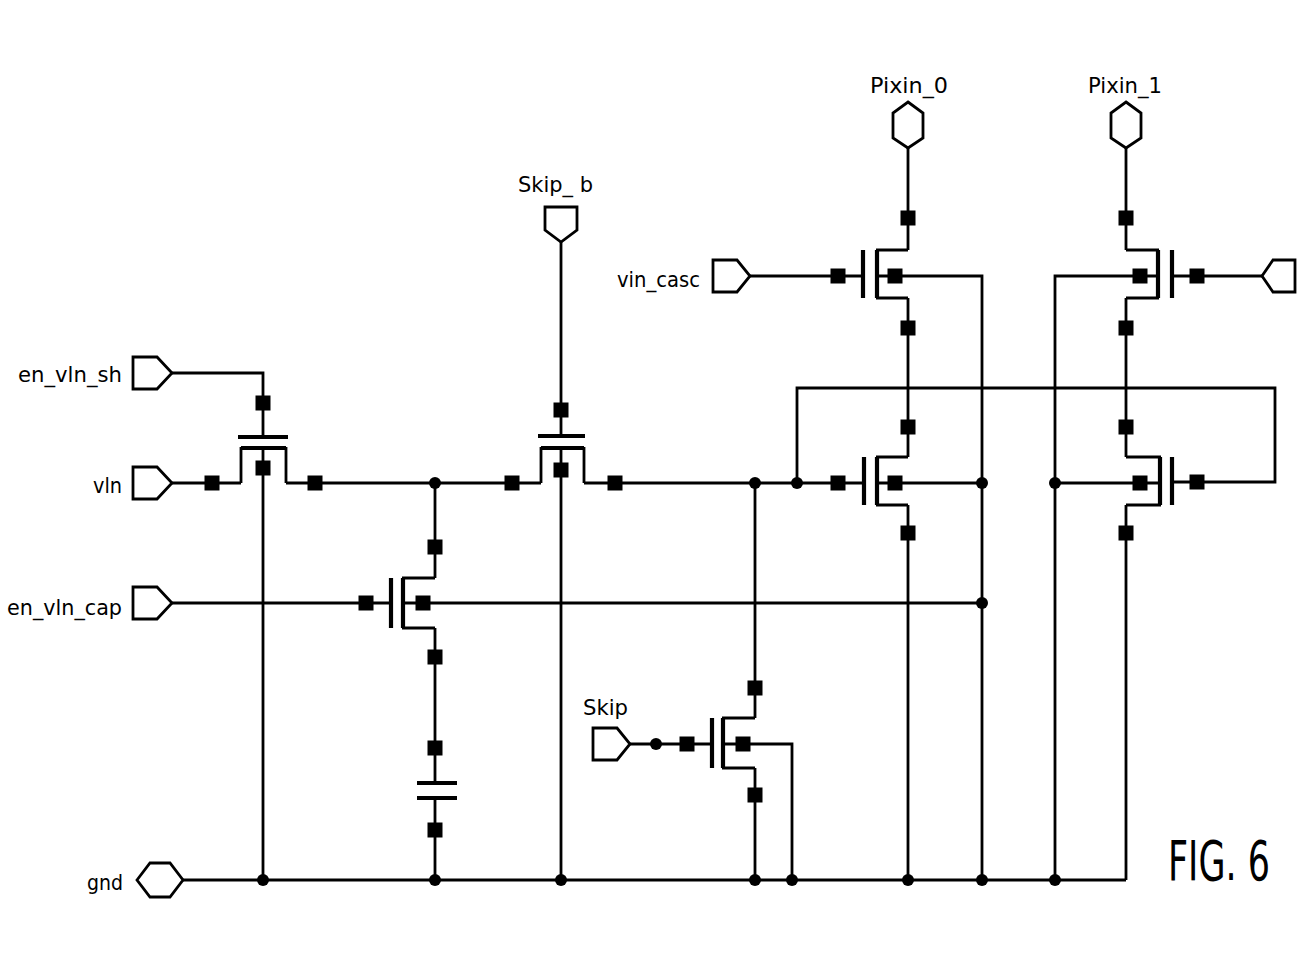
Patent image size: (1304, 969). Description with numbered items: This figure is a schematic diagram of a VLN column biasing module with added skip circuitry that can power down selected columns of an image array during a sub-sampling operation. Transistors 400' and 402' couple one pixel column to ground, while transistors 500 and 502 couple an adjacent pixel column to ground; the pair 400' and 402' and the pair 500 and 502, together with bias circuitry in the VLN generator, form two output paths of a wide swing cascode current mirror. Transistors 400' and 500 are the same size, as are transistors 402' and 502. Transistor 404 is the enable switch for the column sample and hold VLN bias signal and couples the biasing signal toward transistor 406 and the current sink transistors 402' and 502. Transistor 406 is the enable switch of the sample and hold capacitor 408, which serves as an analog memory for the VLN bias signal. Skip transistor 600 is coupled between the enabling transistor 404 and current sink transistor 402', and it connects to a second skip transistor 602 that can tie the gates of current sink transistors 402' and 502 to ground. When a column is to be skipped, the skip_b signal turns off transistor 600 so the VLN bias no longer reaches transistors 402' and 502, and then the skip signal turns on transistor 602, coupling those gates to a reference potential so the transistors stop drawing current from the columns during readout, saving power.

The transistor 404 is at (276, 437).
The skip transistor 600 is at (578, 436).
The transistor 406 is at (388, 590).
The capacitor 408 is at (455, 783).
The skip transistor 602 is at (708, 763).
The transistor 400' is at (838, 294).
The current sink transistor 402' is at (847, 505).
The transistor 500 is at (1175, 258).
The current sink transistor 502 is at (1178, 500).